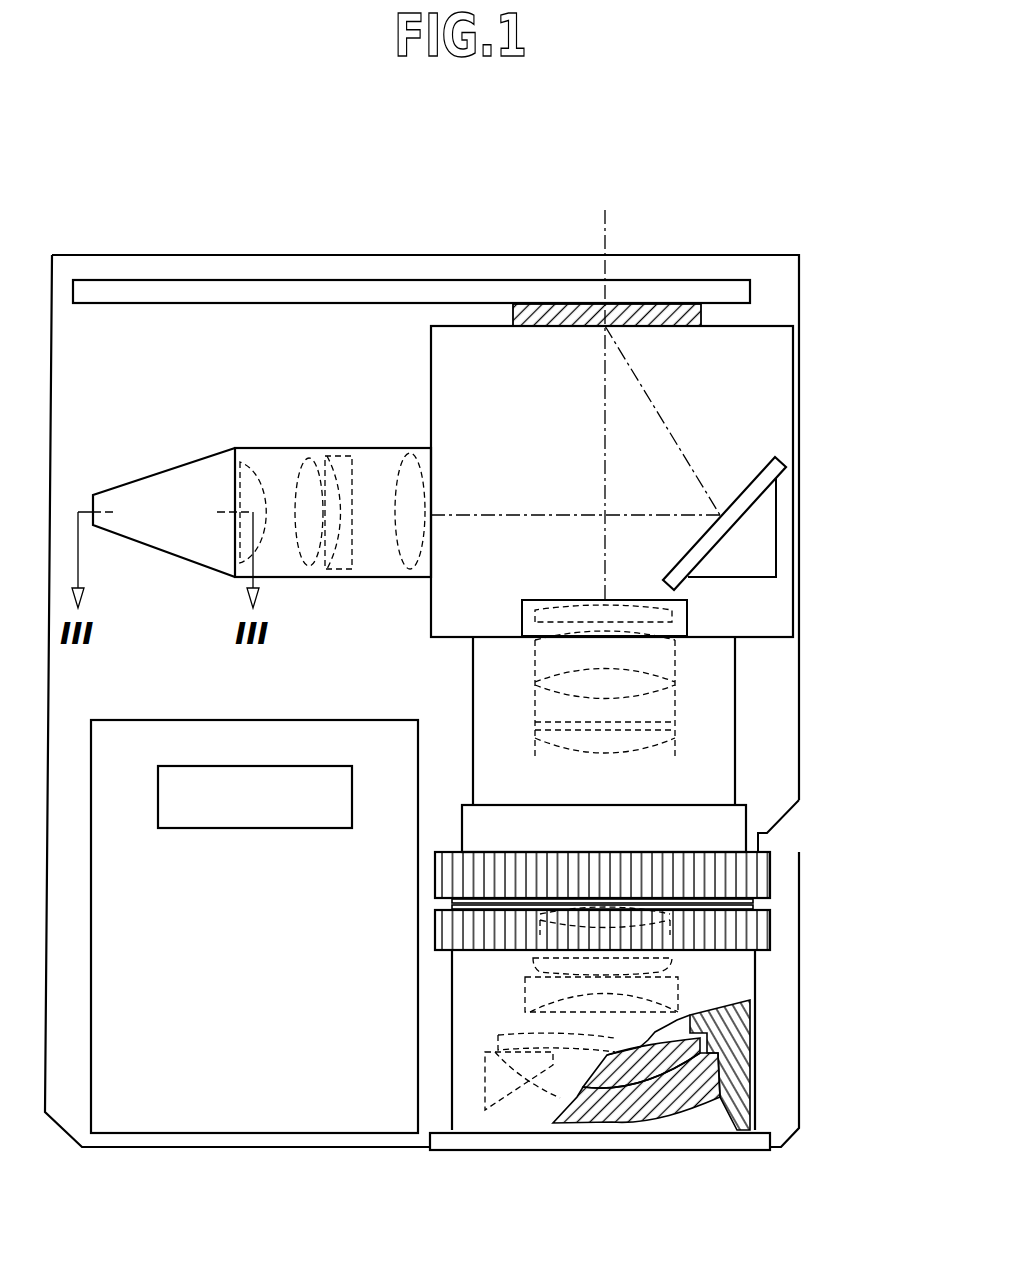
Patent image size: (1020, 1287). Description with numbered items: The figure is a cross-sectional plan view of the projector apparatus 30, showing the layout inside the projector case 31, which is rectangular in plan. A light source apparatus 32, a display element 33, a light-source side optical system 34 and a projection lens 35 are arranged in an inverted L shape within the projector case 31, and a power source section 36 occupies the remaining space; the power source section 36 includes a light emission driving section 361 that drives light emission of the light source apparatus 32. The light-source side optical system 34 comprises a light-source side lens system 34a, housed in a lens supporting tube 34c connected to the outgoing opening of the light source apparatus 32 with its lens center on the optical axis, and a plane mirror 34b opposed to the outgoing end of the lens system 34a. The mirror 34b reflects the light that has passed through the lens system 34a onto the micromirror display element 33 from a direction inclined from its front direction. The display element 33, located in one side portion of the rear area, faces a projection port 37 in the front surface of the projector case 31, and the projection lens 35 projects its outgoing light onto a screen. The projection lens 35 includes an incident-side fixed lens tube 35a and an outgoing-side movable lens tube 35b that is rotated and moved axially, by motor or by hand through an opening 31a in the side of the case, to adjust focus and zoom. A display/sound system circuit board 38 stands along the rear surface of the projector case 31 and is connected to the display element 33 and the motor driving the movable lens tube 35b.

The projector apparatus 30 is at (720, 240).
The projector case 31 is at (799, 288).
The opening 31a is at (783, 840).
The light source apparatus 32 is at (175, 495).
The display element 33 is at (648, 303).
The light-source side optical system 34 is at (396, 449).
The light-source side lens system 34a is at (331, 548).
The mirror 34b is at (752, 470).
The lens supporting tube 34c is at (250, 447).
The projection lens 35 is at (750, 784).
The incident-side fixed lens tube 35a is at (713, 694).
The outgoing-side movable lens tube 35b is at (735, 965).
The power source section 36 is at (345, 735).
The light emission driving section 361 is at (212, 766).
The projection port 37 is at (452, 1110).
The display/sound system circuit board 38 is at (458, 292).